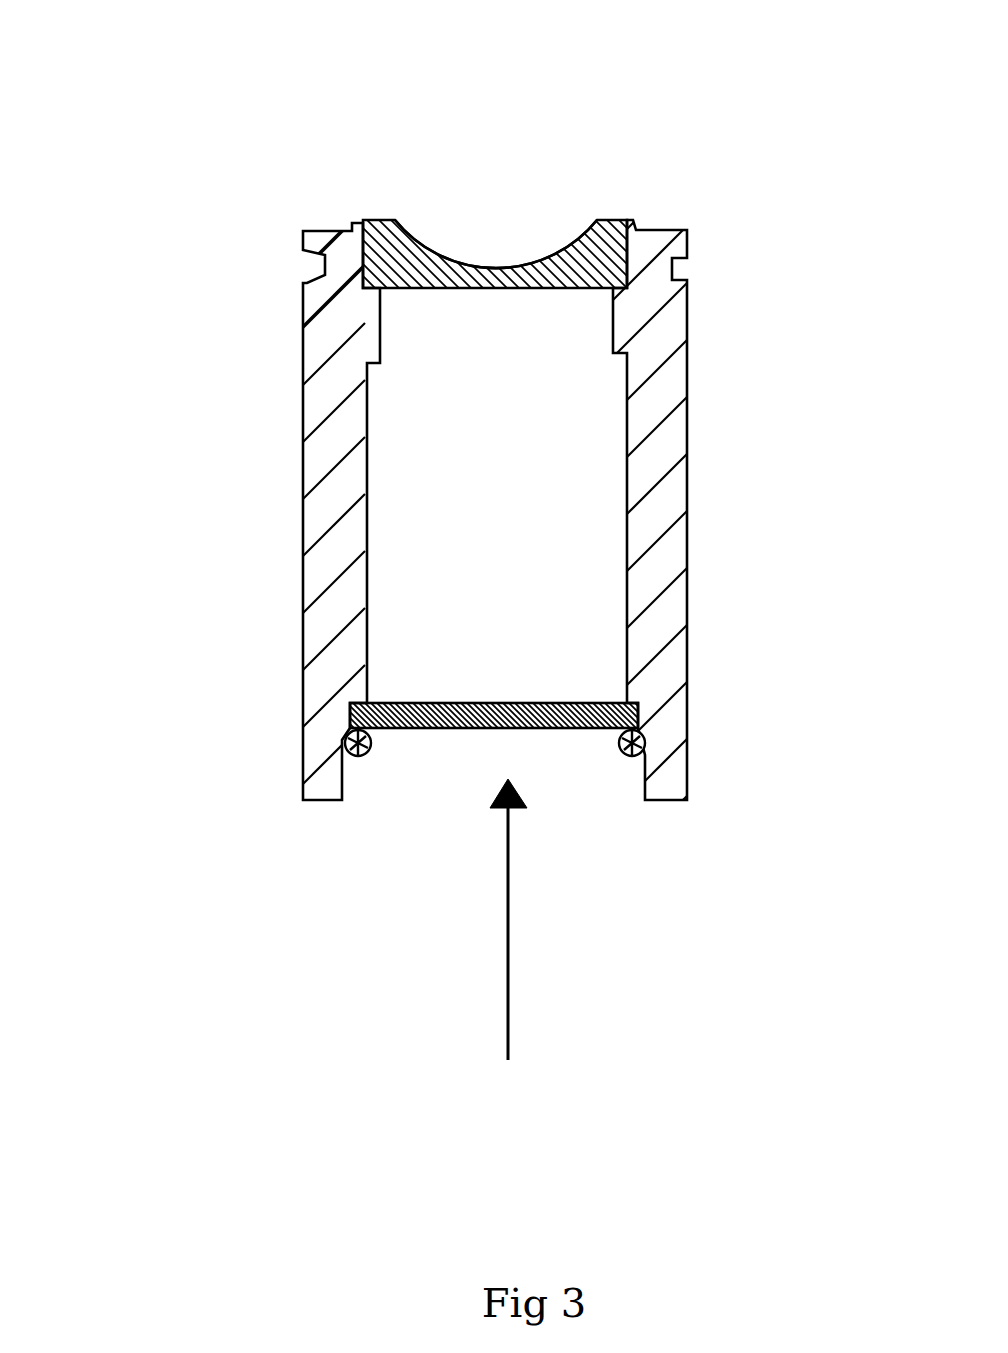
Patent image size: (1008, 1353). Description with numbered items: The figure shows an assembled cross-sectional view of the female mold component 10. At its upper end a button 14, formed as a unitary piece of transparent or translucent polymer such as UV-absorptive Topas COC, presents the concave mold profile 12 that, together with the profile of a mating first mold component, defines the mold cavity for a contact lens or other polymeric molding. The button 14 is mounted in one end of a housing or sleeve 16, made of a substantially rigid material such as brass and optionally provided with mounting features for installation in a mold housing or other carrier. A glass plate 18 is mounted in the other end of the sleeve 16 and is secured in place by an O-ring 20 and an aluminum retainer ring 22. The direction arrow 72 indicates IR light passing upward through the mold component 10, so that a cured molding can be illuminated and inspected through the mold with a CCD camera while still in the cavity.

The mold component 10 is at (178, 8).
The mold profile 12 is at (492, 266).
The button 14 is at (383, 219).
The housing or sleeve 16 is at (688, 495).
The glass plate 18 is at (567, 733).
The O-ring 20 is at (642, 750).
The aluminum retainer ring 22 is at (358, 757).
The direction arrow 72 is at (504, 978).